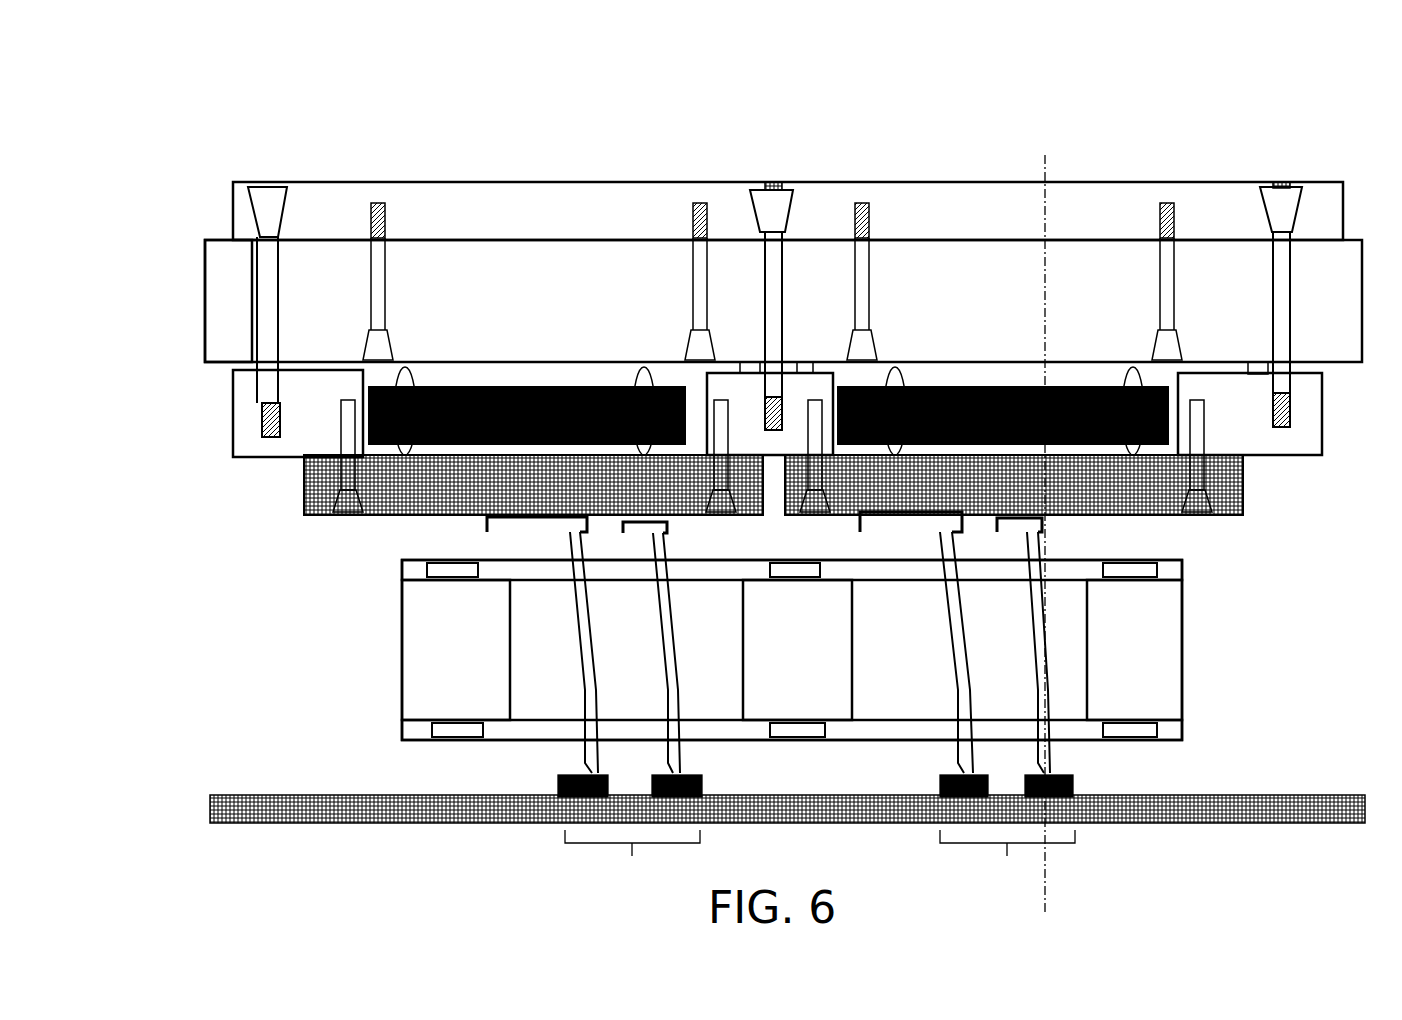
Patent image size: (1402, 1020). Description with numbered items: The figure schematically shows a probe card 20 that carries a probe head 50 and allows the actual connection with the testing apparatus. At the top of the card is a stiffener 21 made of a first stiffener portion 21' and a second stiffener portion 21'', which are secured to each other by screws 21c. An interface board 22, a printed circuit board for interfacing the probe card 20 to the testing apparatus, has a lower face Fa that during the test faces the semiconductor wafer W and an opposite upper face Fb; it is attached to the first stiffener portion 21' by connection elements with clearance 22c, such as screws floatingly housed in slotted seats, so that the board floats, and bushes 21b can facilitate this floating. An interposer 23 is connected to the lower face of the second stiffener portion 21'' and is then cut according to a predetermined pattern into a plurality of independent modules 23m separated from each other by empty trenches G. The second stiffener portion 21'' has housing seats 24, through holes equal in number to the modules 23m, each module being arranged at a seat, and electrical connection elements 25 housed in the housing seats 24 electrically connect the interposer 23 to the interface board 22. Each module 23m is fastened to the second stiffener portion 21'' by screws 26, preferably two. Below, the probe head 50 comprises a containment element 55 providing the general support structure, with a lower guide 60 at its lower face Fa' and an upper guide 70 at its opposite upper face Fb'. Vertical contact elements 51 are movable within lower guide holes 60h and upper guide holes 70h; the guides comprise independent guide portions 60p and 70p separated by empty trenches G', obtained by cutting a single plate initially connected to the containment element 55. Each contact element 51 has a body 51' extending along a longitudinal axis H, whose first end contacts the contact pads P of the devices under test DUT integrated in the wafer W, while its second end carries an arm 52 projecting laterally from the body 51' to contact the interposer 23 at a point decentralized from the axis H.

The probe card 20 is at (246, 155).
The stiffener 21 is at (219, 270).
The first stiffener portion 21' is at (788, 135).
The second stiffener portion 21'' is at (798, 457).
The bushes 21b is at (1256, 360).
The screws 21c is at (1287, 292).
The interface board 22 is at (462, 308).
The connection elements with clearance 22c is at (378, 282).
The interposer 23 is at (1240, 505).
The modules 23m is at (458, 493).
The housing seats 24 is at (558, 372).
The electrical connection elements 25 is at (455, 422).
The screws 26 is at (345, 445).
The probe head 50 is at (400, 658).
The contact elements 51 is at (465, 775).
The body 51' is at (810, 652).
The arm 52 is at (530, 532).
The containment element 55 is at (452, 653).
The lower guide 60 is at (1175, 730).
The lower guide holes 60h is at (962, 733).
The guide portions 60p is at (705, 735).
The upper guide 70 is at (1168, 572).
The upper guide holes 70h is at (943, 571).
The guide portions 70p is at (686, 566).
The contact pads P is at (560, 797).
The semiconductor wafer W is at (256, 804).
The devices under test DUT is at (820, 856).
The longitudinal axis H is at (1037, 534).
The trenches G is at (796, 525).
The trenches G' is at (784, 716).
The lower face Fa is at (1348, 405).
The upper face Fb is at (1358, 175).
The lower face Fa' is at (1119, 755).
The upper face Fb' is at (1092, 551).